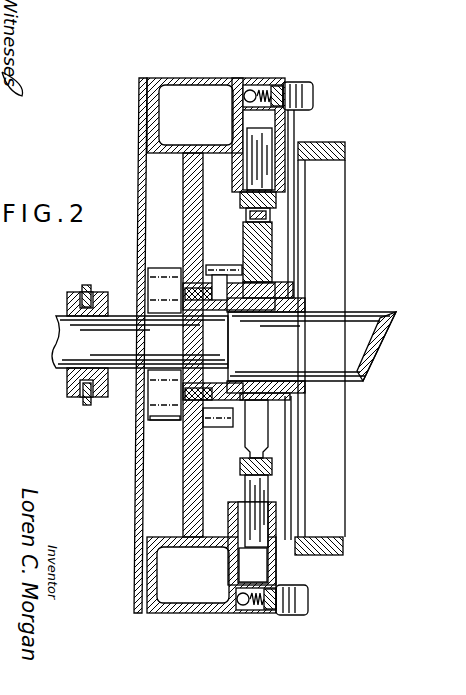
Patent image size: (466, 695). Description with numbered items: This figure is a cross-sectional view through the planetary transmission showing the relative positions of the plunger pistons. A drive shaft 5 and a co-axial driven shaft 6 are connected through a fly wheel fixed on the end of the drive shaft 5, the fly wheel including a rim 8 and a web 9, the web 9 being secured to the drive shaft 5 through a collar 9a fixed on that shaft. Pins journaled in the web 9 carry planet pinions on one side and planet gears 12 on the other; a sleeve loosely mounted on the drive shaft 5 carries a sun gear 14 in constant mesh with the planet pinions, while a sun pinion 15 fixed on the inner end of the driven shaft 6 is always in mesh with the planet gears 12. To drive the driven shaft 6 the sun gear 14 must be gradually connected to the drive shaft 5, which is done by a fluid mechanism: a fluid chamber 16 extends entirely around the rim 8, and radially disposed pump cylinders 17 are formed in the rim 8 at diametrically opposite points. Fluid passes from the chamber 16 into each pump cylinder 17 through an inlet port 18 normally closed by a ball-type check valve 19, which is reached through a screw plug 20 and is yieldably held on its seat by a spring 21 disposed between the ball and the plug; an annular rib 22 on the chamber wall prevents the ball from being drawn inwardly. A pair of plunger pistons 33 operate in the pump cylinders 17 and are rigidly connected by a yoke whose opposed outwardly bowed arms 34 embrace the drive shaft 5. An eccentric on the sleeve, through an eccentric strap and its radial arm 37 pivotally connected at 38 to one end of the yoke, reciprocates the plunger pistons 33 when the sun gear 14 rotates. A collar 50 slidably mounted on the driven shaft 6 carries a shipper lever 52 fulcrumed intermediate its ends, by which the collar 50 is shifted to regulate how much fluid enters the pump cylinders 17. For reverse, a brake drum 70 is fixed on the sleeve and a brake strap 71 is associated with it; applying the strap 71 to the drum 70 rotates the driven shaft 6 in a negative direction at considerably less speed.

The drive shaft 5 is at (365, 338).
The driven shaft 6 is at (53, 323).
The rim 8 is at (141, 100).
The web 9 is at (188, 207).
The collar 9a is at (200, 288).
The planet gear 12 is at (163, 417).
The sun gear 14 is at (218, 267).
The sun pinion 15 is at (138, 392).
The fluid chamber 16 is at (195, 344).
The pump cylinder 17 is at (268, 123).
The inlet port 18 is at (231, 79).
The check valve 19 is at (261, 81).
The screw plug 20 is at (313, 92).
The spring 21 is at (243, 492).
The annular rib 22 is at (253, 565).
The plunger piston 33 is at (265, 177).
The outwardly bowed arm 34 is at (258, 428).
The radial arm 37 is at (270, 265).
The pivotal connection 38 is at (275, 215).
The collar 50 is at (67, 382).
The shipper lever 52 is at (87, 288).
The brake drum 70 is at (335, 240).
The brake strap 71 is at (346, 143).